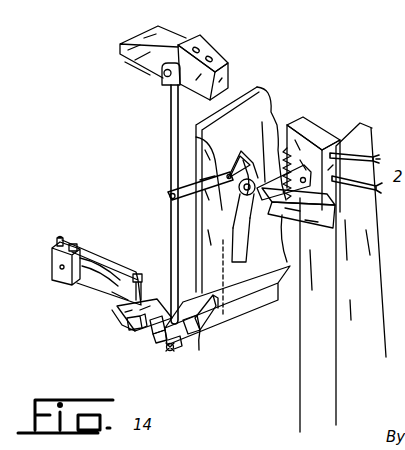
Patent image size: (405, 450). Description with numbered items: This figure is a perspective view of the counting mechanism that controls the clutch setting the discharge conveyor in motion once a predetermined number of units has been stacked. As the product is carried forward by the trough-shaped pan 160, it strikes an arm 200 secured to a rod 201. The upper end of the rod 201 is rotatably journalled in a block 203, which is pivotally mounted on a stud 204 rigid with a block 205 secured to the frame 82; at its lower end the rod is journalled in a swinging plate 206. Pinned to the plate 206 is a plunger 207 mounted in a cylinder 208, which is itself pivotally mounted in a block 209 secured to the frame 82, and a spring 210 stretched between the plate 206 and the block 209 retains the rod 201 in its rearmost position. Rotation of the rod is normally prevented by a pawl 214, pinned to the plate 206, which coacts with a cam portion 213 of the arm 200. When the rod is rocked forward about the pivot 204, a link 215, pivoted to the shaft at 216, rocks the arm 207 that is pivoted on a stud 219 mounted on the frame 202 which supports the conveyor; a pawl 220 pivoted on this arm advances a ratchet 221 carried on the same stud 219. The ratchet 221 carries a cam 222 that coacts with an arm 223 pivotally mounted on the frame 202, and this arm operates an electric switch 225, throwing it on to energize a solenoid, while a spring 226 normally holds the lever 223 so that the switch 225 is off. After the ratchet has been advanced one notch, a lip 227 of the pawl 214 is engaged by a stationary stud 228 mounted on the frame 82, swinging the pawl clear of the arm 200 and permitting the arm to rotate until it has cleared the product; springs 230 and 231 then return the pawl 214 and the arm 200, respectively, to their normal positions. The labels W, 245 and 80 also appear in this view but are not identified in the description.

The frame 82 is at (158, 42).
The block 205 is at (228, 68).
The stud 204 is at (156, 76).
The block 203 is at (162, 85).
The rod 201 is at (171, 154).
The pawl 220 is at (228, 166).
The wire W is at (262, 98).
The plunger 207 is at (248, 147).
The stud 219 is at (244, 231).
The pivot 216 is at (169, 197).
The link 215 is at (195, 187).
The cam 222 is at (262, 238).
The ratchet 221 is at (232, 235).
The spring 226 is at (282, 148).
The arm 223 is at (290, 203).
The electric switch 225 is at (315, 140).
The frame 202 is at (377, 122).
The screws 245 is at (366, 161).
The pan 160 is at (253, 310).
The spring 231 is at (203, 297).
The arm 200 is at (199, 323).
The block 209 is at (49, 266).
The spring 210 is at (72, 250).
The cylinder 208 is at (80, 283).
The spring 230 is at (163, 308).
The support 80 is at (108, 313).
The swinging plate 206 is at (143, 315).
The lip 227 is at (135, 338).
The pawl 214 is at (158, 345).
The cam portion 213 is at (186, 346).
The stationary stud 228 is at (173, 360).